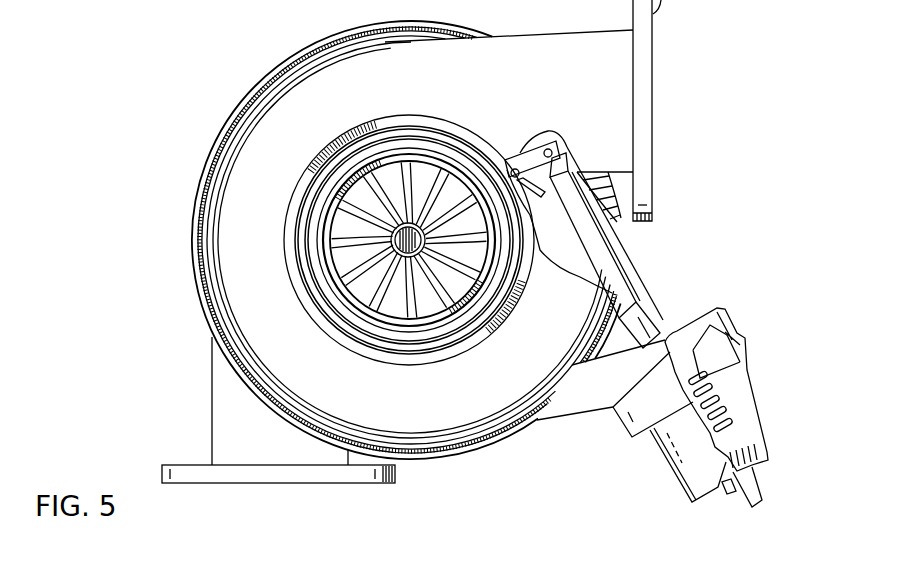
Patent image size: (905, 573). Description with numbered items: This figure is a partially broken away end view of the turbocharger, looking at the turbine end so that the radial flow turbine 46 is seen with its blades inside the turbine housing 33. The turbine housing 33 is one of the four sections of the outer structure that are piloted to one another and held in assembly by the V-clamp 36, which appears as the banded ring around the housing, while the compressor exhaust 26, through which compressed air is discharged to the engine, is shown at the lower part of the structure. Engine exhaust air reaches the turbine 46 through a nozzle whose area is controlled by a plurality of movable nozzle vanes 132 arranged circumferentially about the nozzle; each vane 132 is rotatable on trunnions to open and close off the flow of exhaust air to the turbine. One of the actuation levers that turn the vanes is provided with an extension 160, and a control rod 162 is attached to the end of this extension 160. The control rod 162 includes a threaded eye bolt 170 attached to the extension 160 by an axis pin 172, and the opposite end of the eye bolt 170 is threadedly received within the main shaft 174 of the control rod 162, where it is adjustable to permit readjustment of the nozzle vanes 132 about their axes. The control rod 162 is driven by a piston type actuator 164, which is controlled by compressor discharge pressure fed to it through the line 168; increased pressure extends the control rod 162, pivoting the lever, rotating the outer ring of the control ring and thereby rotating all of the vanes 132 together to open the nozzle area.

The compressor exhaust 26 is at (372, 484).
The turbine housing 33 is at (238, 188).
The V-clamp 36 is at (220, 128).
The radial flow turbine 46 is at (392, 241).
The nozzle vanes 132 is at (542, 190).
The extension 160 is at (528, 160).
The control rod 162 is at (632, 273).
The piston type actuator 164 is at (750, 417).
The line 168 is at (740, 517).
The threaded eye bolt 170 is at (562, 165).
The axis pin 172 is at (557, 132).
The main shaft 174 is at (617, 260).